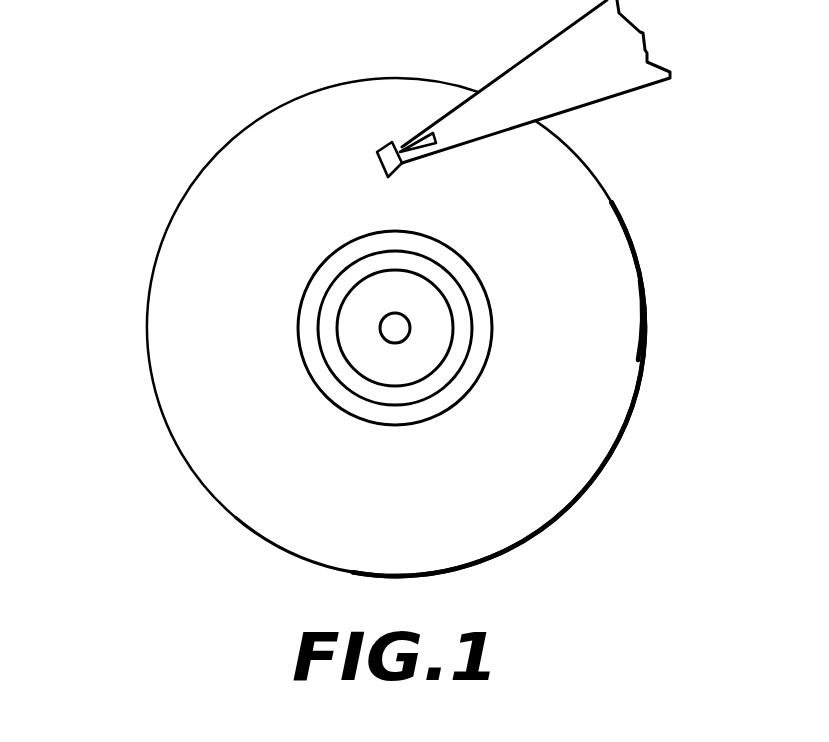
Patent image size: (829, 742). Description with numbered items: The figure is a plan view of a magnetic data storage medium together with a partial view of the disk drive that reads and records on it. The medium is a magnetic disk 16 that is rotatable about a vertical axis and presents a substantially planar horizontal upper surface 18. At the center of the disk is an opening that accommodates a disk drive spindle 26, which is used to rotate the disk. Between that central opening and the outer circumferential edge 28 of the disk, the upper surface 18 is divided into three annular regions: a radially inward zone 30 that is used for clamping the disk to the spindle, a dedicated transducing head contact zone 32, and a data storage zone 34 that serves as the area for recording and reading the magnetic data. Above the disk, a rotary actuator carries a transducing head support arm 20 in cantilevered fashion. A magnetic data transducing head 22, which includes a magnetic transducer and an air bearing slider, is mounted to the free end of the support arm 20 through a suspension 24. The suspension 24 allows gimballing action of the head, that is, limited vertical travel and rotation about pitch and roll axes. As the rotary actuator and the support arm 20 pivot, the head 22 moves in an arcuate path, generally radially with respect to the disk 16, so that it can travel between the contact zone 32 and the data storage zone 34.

The magnetic disk 16 is at (217, 188).
The upper surface 18 is at (267, 278).
The transducing head support arm 20 is at (603, 100).
The magnetic data transducing head 22 is at (397, 168).
The suspension 24 is at (413, 138).
The disk drive spindle 26 is at (400, 341).
The outer circumferential edge 28 is at (595, 480).
The radially inward zone 30 is at (440, 323).
The transducing head contact zone 32 is at (318, 367).
The data storage zone 34 is at (622, 318).